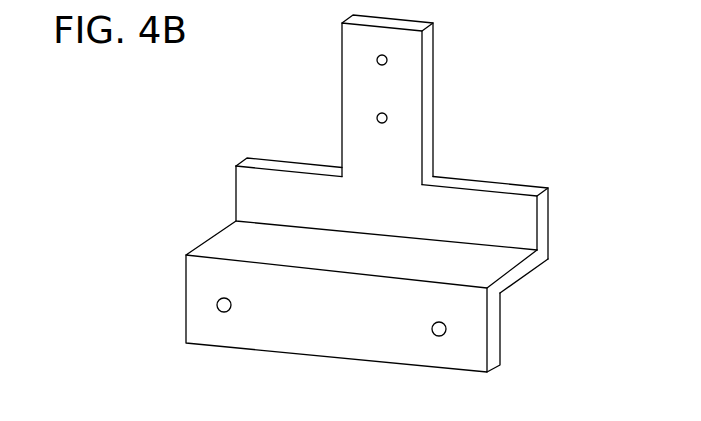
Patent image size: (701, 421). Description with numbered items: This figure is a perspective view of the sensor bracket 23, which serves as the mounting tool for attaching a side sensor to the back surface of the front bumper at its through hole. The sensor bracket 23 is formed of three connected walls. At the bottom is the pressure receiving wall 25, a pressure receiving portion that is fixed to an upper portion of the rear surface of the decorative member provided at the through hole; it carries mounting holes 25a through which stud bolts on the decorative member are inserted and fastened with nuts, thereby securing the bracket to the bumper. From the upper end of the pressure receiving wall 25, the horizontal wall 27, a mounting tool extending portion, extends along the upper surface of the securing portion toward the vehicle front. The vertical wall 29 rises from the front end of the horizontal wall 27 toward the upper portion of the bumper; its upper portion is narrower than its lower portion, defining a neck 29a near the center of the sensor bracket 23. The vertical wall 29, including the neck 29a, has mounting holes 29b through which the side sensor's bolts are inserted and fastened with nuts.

The sensor bracket 23 is at (463, 82).
The pressure receiving wall 25 is at (364, 330).
The mounting holes 25a is at (224, 305).
The horizontal wall 27 is at (228, 243).
The vertical wall 29 is at (523, 220).
The neck 29a is at (401, 97).
The mounting holes 29b is at (382, 118).